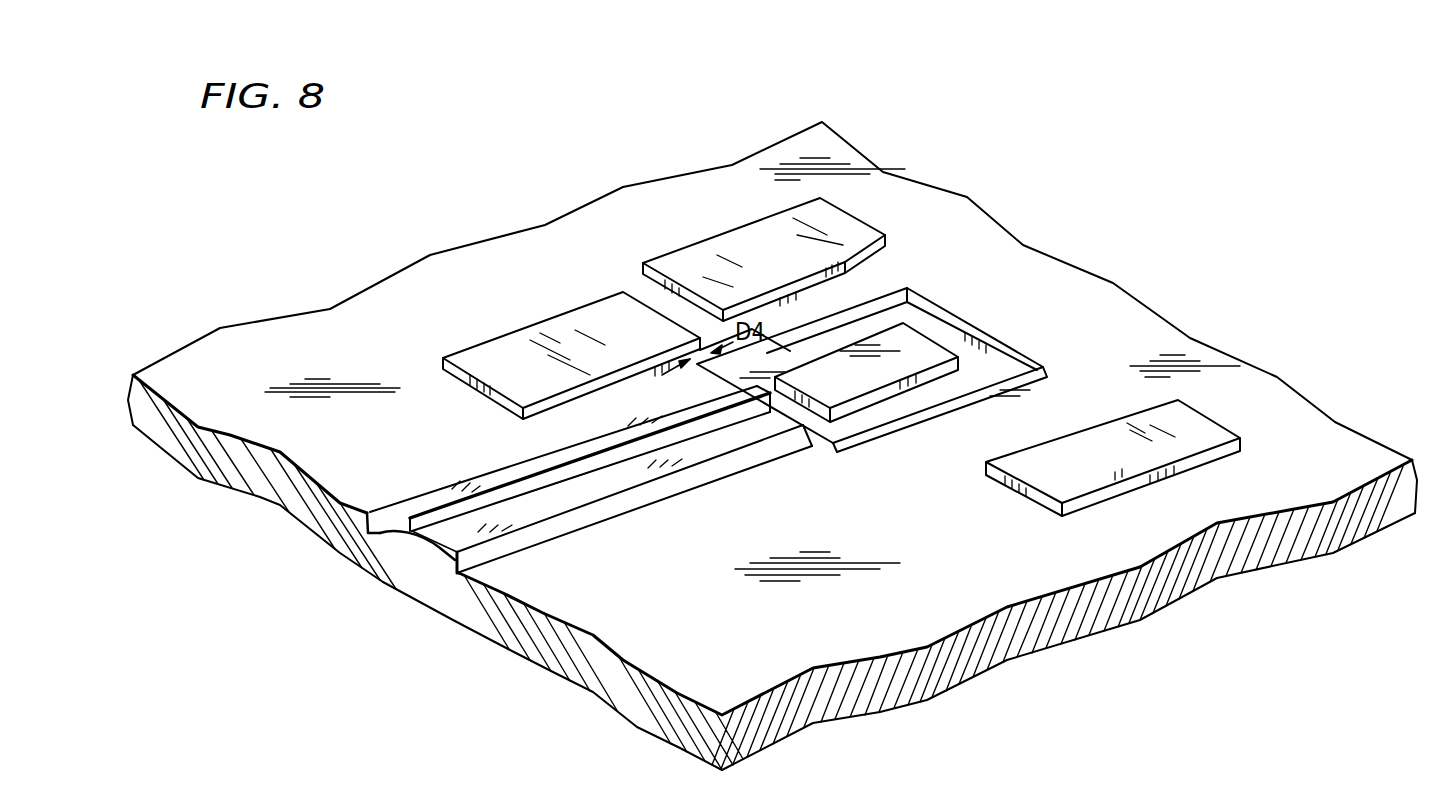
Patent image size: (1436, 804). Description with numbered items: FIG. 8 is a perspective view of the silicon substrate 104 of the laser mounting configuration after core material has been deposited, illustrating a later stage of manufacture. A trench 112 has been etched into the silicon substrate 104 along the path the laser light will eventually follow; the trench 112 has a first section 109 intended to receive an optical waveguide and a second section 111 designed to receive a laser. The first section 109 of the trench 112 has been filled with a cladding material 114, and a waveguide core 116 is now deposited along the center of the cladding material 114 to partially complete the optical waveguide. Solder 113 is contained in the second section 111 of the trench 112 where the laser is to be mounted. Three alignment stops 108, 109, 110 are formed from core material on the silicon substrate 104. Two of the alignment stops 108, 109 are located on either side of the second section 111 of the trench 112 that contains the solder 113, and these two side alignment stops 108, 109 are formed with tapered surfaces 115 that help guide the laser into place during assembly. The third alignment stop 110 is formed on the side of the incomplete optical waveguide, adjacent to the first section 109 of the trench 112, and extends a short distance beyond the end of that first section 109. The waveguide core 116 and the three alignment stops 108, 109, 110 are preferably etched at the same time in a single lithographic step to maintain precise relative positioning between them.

The silicon substrate 104 is at (562, 597).
The alignment stop 108 is at (745, 238).
The first section of the trench / alignment stop 109 is at (648, 503).
The third alignment stop 110 is at (505, 353).
The second section of the trench 111 is at (837, 452).
The trench 112 is at (400, 567).
The solder 113 is at (917, 345).
The cladding material 114 is at (421, 547).
The tapered surfaces 115 is at (867, 255).
The waveguide core 116 is at (375, 533).